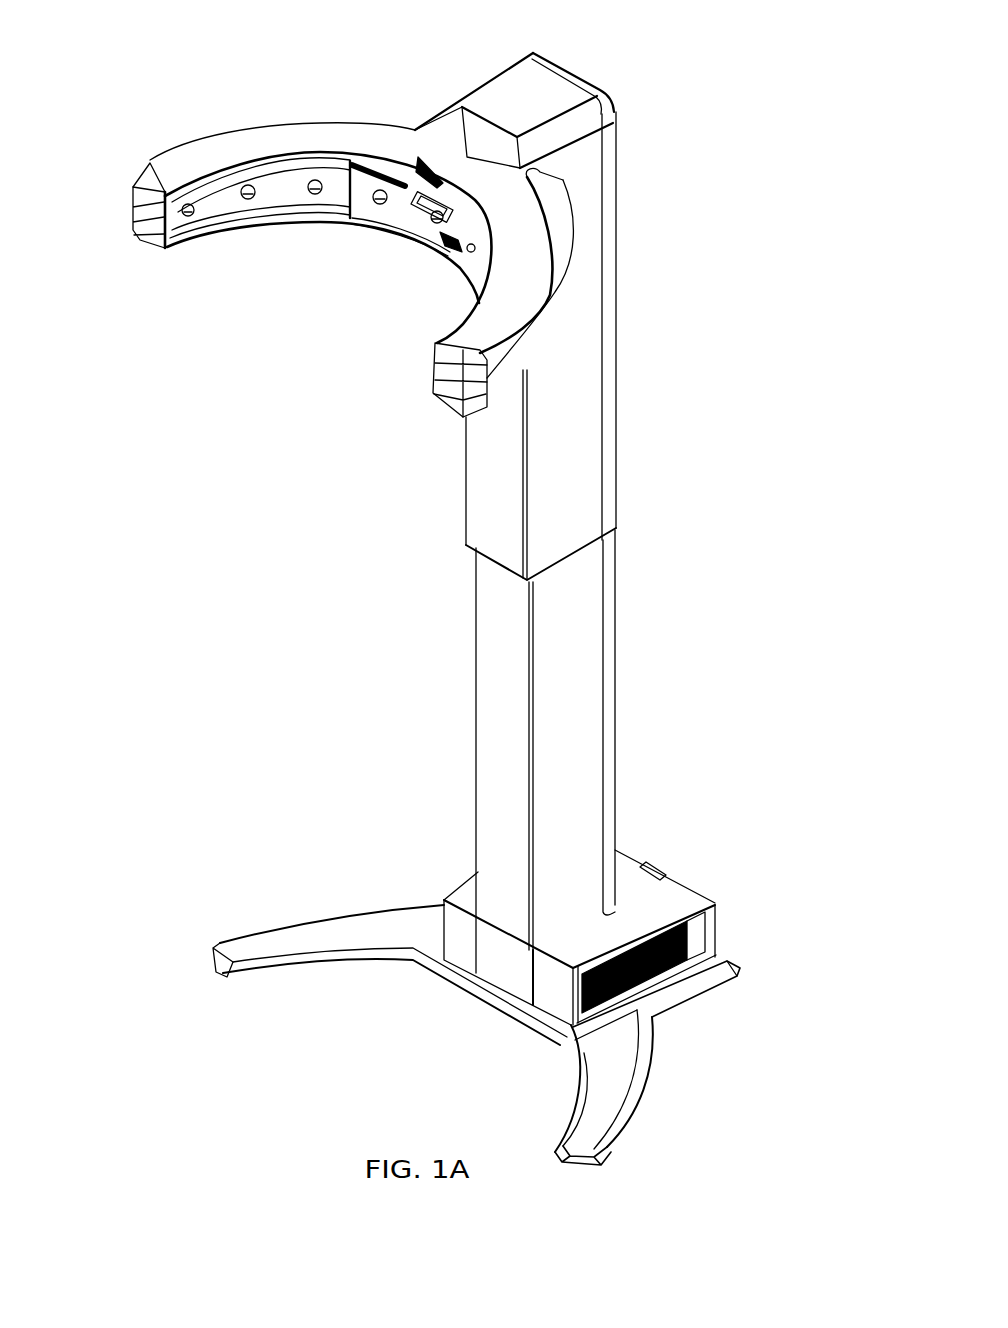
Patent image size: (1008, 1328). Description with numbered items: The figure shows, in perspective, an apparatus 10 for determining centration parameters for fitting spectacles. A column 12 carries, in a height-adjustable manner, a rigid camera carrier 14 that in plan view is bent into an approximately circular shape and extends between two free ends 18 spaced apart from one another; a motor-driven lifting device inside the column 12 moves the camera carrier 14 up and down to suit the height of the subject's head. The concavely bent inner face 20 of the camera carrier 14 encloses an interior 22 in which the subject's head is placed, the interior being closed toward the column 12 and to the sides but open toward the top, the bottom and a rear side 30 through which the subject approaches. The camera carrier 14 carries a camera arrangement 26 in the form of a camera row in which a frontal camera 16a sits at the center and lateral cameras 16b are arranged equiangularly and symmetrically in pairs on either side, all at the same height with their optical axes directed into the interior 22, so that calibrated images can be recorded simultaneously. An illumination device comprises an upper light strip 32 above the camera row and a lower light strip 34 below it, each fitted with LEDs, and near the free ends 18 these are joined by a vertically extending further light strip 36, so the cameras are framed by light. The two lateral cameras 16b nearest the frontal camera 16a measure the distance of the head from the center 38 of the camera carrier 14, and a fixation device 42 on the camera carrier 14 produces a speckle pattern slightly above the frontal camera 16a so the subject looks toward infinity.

The apparatus 10 is at (462, 588).
The column 12 is at (592, 748).
The camera carrier 14 is at (406, 264).
The frontal camera 16a is at (431, 225).
The lateral cameras 16b is at (246, 203).
The free ends 18 is at (133, 215).
The inner face 20 is at (405, 163).
The interior 22 is at (273, 366).
The camera arrangement 26 is at (142, 254).
The rear side 30 is at (322, 405).
The upper light strip 32 is at (200, 167).
The lower light strip 34 is at (280, 215).
The further light strip 36 is at (160, 253).
The center 38 is at (444, 240).
The fixation device 42 is at (422, 190).